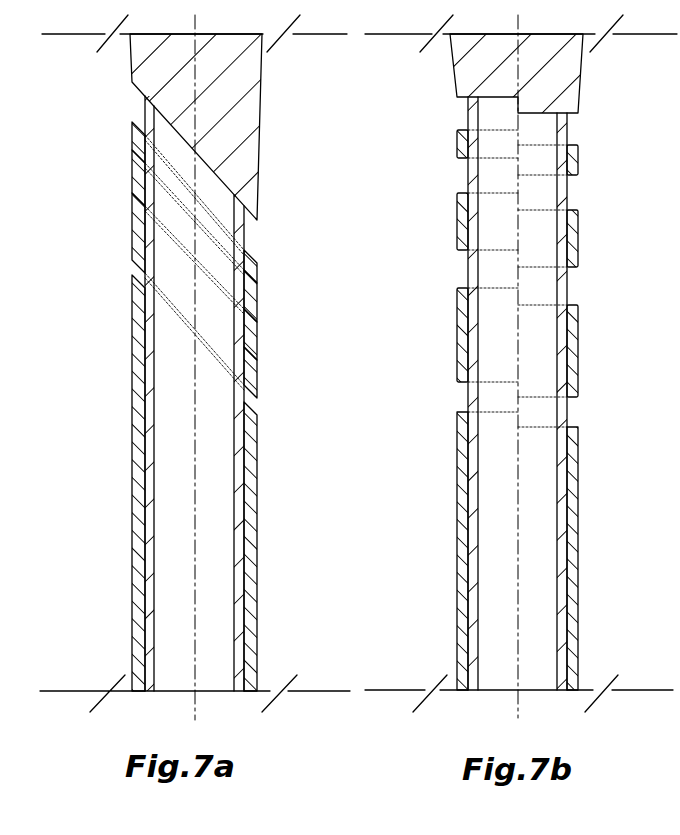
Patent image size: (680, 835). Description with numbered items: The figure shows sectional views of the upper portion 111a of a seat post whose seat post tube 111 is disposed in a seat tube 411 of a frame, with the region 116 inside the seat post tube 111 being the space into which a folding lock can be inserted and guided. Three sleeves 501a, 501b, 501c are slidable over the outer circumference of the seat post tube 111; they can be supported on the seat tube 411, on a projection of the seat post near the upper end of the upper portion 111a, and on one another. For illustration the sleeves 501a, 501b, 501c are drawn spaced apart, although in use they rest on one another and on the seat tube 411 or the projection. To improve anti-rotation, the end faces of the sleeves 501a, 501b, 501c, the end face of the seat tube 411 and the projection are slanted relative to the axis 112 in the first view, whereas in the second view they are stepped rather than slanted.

In FIG. 7a, the seat post tube 111 is at (243, 555).
In FIG. 7b, the seat post tube 111 is at (563, 573).
In FIG. 7a, the upper portion 111a is at (258, 235).
In FIG. 7b, the upper portion 111a is at (585, 188).
In FIG. 7a, the axis 112 is at (195, 440).
In FIG. 7b, the axis 112 is at (518, 461).
In FIG. 7a, the region 116 is at (177, 573).
In FIG. 7b, the region 116 is at (497, 550).
In FIG. 7a, the seat tube 411 is at (252, 523).
In FIG. 7b, the seat tube 411 is at (573, 525).
In FIG. 7a, the sleeve 501a is at (132, 232).
In FIG. 7b, the sleeve 501a is at (457, 350).
In FIG. 7a, the sleeve 501b is at (132, 175).
In FIG. 7b, the sleeve 501b is at (457, 217).
In FIG. 7a, the sleeve 501c is at (132, 140).
In FIG. 7b, the sleeve 501c is at (457, 133).